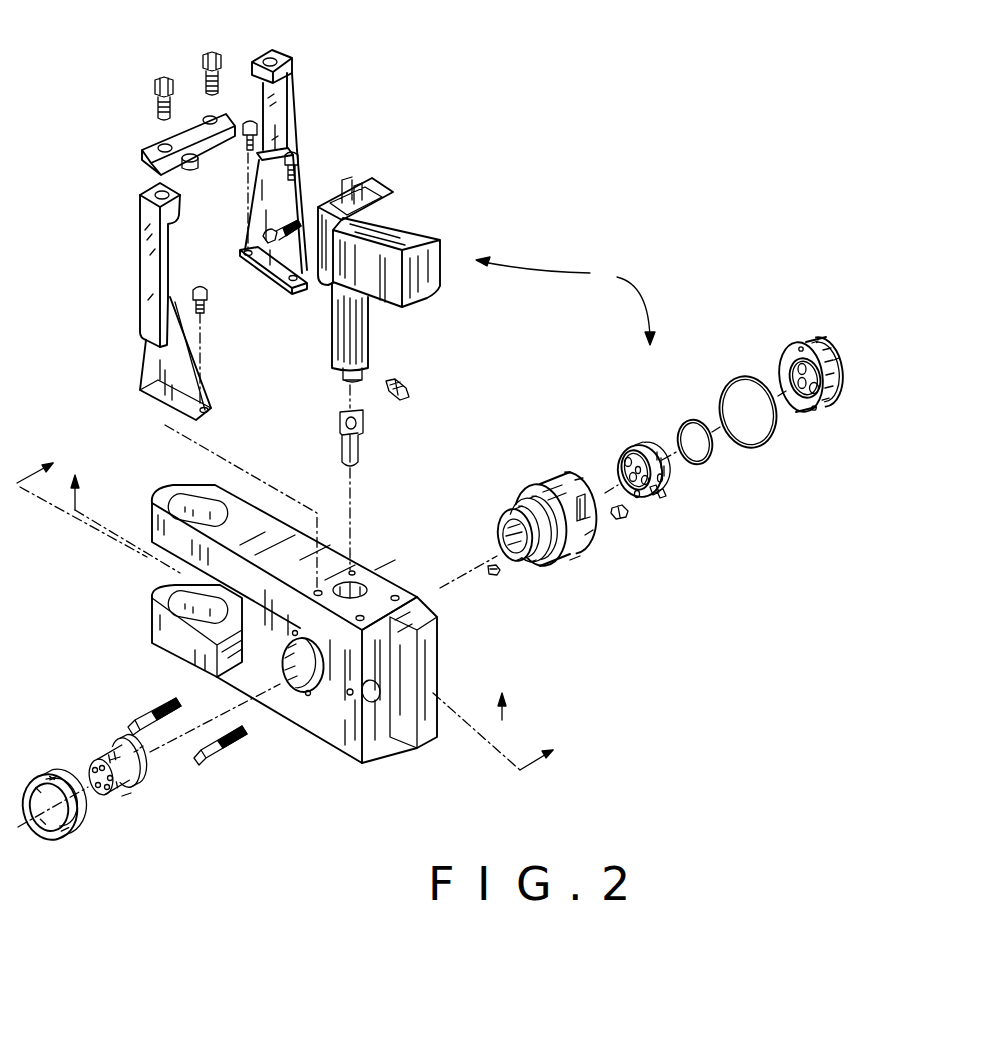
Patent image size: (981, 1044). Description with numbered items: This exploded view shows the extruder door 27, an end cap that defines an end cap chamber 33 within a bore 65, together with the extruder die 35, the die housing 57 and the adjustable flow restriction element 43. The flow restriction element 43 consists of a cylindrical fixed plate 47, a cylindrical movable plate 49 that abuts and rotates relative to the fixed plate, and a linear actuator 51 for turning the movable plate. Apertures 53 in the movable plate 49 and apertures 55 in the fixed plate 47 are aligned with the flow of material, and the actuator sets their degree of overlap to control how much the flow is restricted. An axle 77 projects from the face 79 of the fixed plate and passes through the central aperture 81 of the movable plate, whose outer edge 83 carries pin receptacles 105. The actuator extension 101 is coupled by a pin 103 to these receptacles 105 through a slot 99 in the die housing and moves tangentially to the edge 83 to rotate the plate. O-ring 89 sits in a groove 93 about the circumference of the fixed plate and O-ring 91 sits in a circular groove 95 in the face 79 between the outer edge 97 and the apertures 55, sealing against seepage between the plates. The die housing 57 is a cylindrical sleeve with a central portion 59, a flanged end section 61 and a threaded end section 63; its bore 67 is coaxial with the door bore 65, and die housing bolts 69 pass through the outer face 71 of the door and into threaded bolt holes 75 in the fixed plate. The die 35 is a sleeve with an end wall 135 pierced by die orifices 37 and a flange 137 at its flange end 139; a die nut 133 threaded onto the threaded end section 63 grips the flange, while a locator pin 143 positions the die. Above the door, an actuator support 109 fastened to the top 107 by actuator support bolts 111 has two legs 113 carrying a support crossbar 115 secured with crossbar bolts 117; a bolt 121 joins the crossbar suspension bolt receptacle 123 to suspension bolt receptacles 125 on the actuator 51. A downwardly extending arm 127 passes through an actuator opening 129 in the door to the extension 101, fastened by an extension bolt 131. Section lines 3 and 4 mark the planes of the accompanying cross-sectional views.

The extruder door 27 is at (380, 745).
The end cap chamber 33 is at (274, 705).
The extruder die 35 is at (123, 780).
The die orifice 37 is at (103, 797).
The adjustable flow restriction element 43 is at (565, 301).
The fixed plate component 47 is at (838, 403).
The movable plate component 49 is at (633, 447).
The actuator 51 is at (433, 240).
The apertures in movable plate 53 is at (618, 458).
The apertures in fixed plate 55 is at (792, 365).
The die housing 57 is at (552, 548).
The central portion of die housing 59 is at (547, 553).
The flanged end section 61 is at (573, 533).
The threaded end section 63 is at (540, 563).
The extruder door bore 65 is at (307, 696).
The die housing bore 67 is at (500, 535).
The die housing bolts 69 is at (205, 745).
The outer face of extruder door 71 is at (348, 743).
The threaded bolt holes 75 is at (800, 346).
The axle 77 is at (812, 405).
The face of fixed plate 79 is at (823, 410).
The central aperture of movable plate 81 is at (638, 500).
The outer edge of movable plate 83 is at (662, 473).
The O-ring 89 is at (732, 377).
The O-ring 91 is at (687, 420).
The circumferential groove 93 is at (823, 350).
The circular groove 95 is at (797, 390).
The outer edge of fixed plate 97 is at (833, 362).
The slot in die housing 99 is at (580, 503).
The extension 101 is at (362, 452).
The pin 103 is at (622, 515).
The pin receptacles 105 is at (657, 495).
The top of extruder door 107 is at (280, 540).
The actuator support 109 is at (140, 358).
The actuator support bolts 111 is at (202, 290).
The legs 113 is at (302, 273).
The support crossbar 115 is at (193, 125).
The crossbar bolts 117 is at (216, 50).
The suspension bolt 121 is at (267, 250).
The crossbar suspension bolt receptacle 123 is at (200, 170).
The suspension bolt receptacles 125 is at (358, 180).
The actuator arm 127 is at (363, 342).
The actuator opening 129 is at (362, 583).
The extension bolt 131 is at (410, 393).
The die nut 133 is at (72, 828).
The end wall of die 135 is at (92, 772).
The die flange 137 is at (140, 780).
The flange end of die 139 is at (147, 772).
The locator pin 143 is at (490, 580).
The section line 3- 3 is at (291, 583).
The section line 4- 4 is at (296, 603).